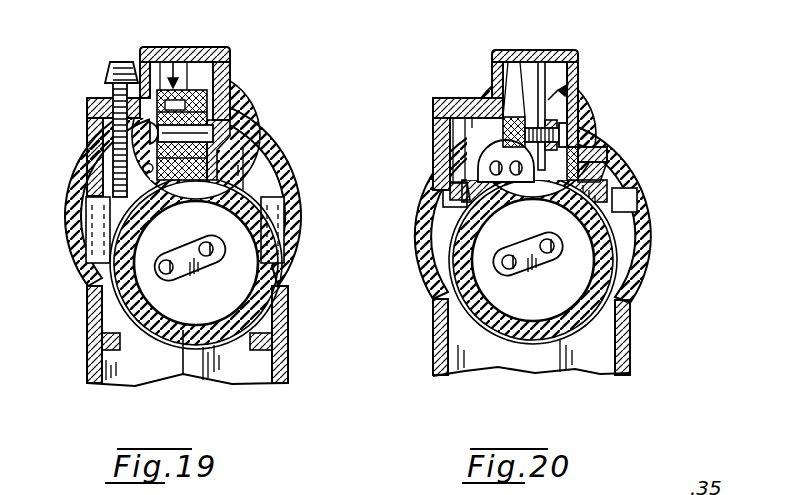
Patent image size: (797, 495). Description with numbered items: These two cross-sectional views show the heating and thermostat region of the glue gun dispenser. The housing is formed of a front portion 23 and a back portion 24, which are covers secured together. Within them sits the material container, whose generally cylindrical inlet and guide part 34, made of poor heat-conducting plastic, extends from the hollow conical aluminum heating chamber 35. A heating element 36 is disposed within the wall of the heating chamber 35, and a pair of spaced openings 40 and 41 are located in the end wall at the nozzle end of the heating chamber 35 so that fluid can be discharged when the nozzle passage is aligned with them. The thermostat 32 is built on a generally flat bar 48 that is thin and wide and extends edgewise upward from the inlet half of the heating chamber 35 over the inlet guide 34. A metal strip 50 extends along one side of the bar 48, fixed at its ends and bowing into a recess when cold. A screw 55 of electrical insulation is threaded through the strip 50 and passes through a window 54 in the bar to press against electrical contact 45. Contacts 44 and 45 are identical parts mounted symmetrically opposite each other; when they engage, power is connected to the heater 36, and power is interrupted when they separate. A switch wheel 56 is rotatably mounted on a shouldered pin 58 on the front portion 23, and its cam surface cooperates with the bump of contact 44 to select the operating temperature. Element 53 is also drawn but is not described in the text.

In FIG. 19, the front portion 23 is at (267, 140).
In FIG. 20, the front portion 23 is at (640, 193).
In FIG. 19, the back portion 24 is at (92, 163).
In FIG. 20, the back portion 24 is at (440, 188).
In FIG. 19, the thermostat 32 is at (173, 62).
In FIG. 20, the thermostat 32 is at (573, 73).
In FIG. 19, the inlet and guide part 34 is at (123, 270).
In FIG. 19, the heating chamber 35 is at (168, 293).
In FIG. 20, the heating chamber 35 is at (597, 277).
In FIG. 20, the heating element 36 is at (492, 152).
In FIG. 19, the opening 40 is at (207, 242).
In FIG. 20, the opening 40 is at (548, 248).
In FIG. 19, the opening 41 is at (167, 258).
In FIG. 20, the opening 41 is at (510, 257).
In FIG. 19, the electrical contact 44 is at (147, 47).
In FIG. 20, the electrical contact 44 is at (497, 110).
In FIG. 19, the electrical contact 45 is at (175, 108).
In FIG. 20, the electrical contact 45 is at (522, 112).
In FIG. 19, the flat bar 48 is at (200, 100).
In FIG. 20, the flat bar 48 is at (541, 110).
In FIG. 19, the strip 50 is at (209, 103).
In FIG. 20, the strip 50 is at (547, 113).
In FIG. 19, the retainer 53 is at (227, 123).
In FIG. 20, the window 54 is at (573, 140).
In FIG. 20, the screw 55 is at (560, 133).
In FIG. 19, the switch wheel 56 is at (110, 77).
In FIG. 19, the shouldered pin 58 is at (87, 121).